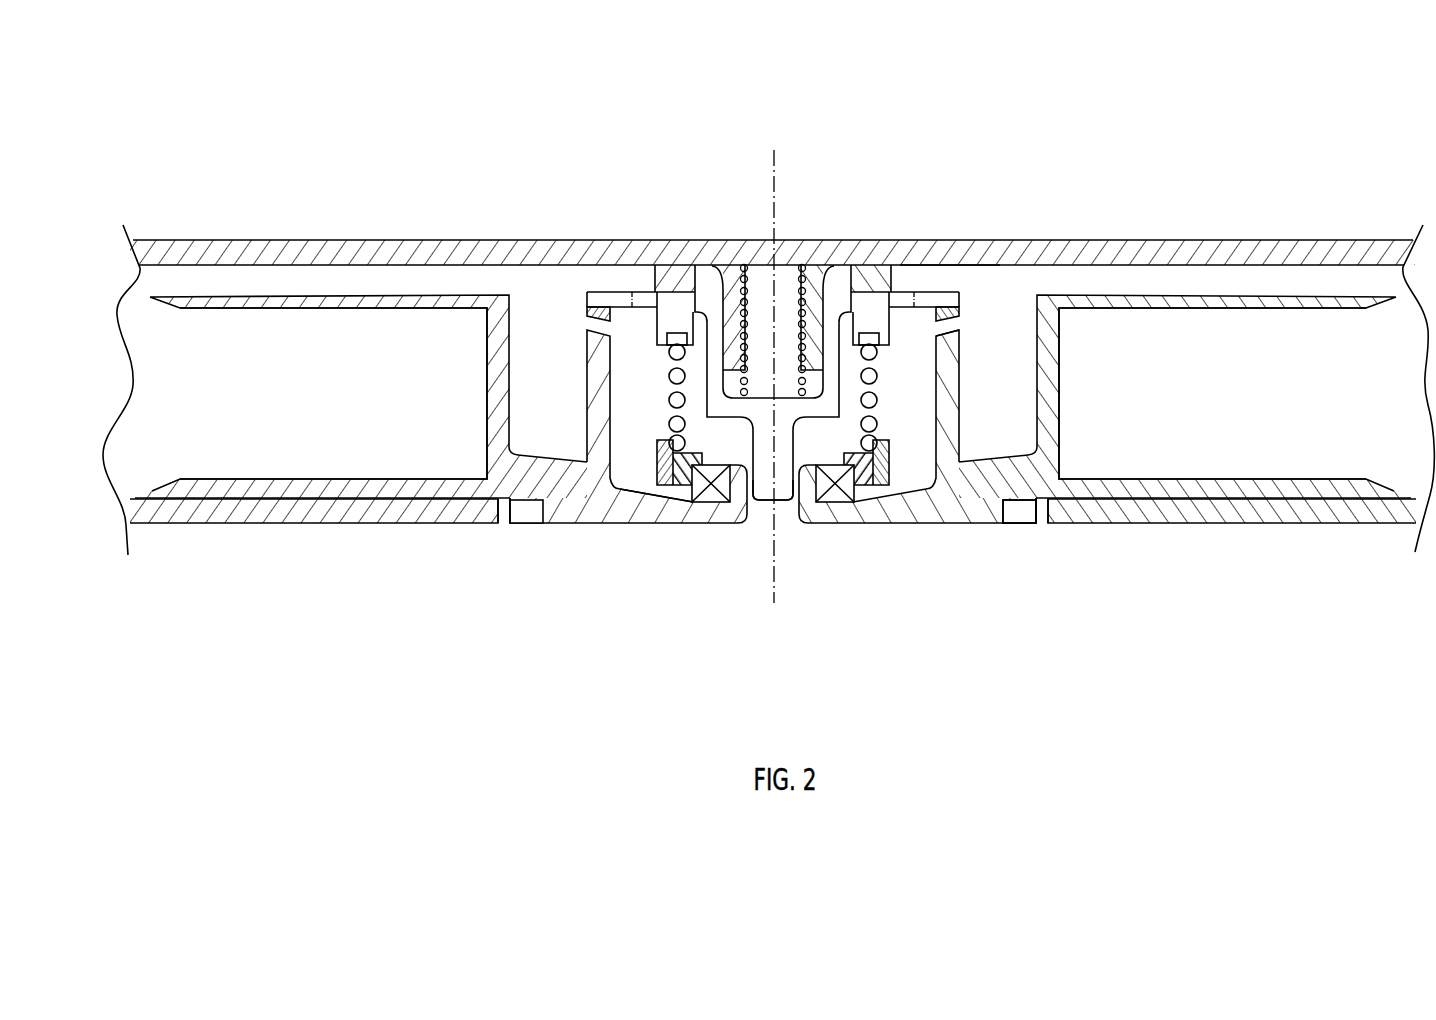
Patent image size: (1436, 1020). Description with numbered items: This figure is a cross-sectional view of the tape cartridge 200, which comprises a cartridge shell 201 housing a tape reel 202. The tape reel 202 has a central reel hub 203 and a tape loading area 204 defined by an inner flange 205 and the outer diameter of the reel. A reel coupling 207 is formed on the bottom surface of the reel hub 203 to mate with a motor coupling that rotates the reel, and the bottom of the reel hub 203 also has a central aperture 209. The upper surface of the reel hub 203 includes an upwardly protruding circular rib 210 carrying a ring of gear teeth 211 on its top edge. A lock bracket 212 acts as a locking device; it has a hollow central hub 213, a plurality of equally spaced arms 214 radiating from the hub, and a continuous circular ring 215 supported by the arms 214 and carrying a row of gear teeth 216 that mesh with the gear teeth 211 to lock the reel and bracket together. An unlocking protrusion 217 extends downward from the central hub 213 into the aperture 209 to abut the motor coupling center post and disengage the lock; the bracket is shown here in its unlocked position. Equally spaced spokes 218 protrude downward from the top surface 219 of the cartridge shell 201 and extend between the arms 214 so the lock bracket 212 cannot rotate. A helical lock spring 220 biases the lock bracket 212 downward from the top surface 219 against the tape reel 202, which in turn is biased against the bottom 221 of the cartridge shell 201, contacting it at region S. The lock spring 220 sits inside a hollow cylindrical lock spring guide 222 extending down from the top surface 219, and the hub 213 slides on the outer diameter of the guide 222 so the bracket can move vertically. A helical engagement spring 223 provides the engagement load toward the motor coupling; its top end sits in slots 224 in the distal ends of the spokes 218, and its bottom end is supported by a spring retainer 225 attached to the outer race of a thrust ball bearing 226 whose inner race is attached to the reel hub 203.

The tape cartridge 200 is at (1310, 226).
The cartridge shell 201 is at (225, 236).
The tape reel 202 is at (392, 290).
The reel hub 203 is at (915, 525).
The tape loading area 204 is at (288, 419).
The inner flange 205 is at (1040, 372).
The reel coupling 207 is at (1022, 525).
The central aperture 209 is at (797, 503).
The circular rib 210 is at (962, 368).
The gear teeth 211 is at (930, 340).
The lock bracket 212 is at (590, 292).
The central hub 213 is at (822, 467).
The arms 214 is at (897, 300).
The circular ring 215 is at (585, 305).
The gear teeth 216 is at (952, 314).
The unlocking protrusion 217 is at (758, 503).
The spokes 218 is at (657, 345).
The top surface 219 is at (947, 258).
The lock spring 220 is at (770, 298).
The bottom 221 is at (266, 524).
The lock spring guide 222 is at (731, 312).
The engagement spring 223 is at (648, 497).
The slots 224 is at (677, 333).
The spring retainer 225 is at (652, 496).
The thrust ball bearing 226 is at (712, 497).
The region S is at (446, 522).